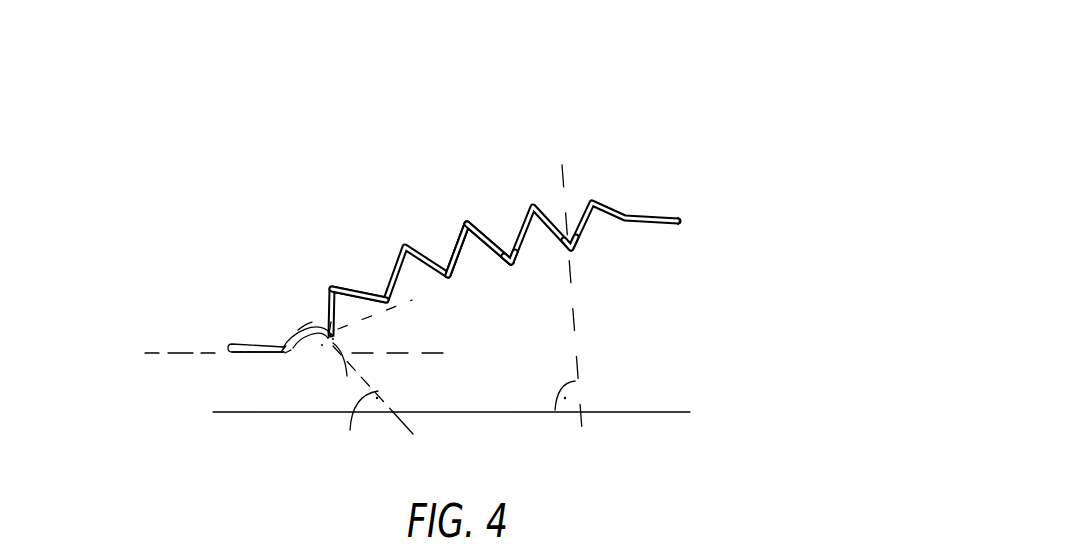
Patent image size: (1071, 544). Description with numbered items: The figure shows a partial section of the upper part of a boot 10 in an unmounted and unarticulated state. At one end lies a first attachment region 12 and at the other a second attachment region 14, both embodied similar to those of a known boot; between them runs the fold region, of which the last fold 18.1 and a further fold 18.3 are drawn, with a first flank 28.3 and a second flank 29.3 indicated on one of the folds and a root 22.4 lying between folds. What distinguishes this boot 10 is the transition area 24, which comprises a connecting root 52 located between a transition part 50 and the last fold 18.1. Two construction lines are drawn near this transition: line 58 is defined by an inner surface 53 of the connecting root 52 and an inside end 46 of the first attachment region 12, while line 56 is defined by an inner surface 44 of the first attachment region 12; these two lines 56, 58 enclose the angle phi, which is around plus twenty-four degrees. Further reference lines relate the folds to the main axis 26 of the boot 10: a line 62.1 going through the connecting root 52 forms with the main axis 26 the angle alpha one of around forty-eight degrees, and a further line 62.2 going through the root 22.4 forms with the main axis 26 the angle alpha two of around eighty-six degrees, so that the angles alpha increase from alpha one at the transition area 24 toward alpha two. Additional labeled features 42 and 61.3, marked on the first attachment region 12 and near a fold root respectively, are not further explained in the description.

The boot 10 is at (596, 66).
The first attachment region 12 is at (248, 363).
The second attachment region 14 is at (662, 201).
The last fold 18.1 is at (332, 285).
The third tooth 18.3 is at (467, 222).
The root 22.4 is at (572, 248).
The transition area 24 is at (292, 297).
The main axis 26 is at (230, 413).
The tooth flank 28.3 is at (457, 249).
The tooth flank 29.3 is at (488, 236).
The flat section 42 is at (279, 342).
The inner surface 44 is at (261, 355).
The inside end 46 is at (284, 357).
The transition part 50 is at (298, 330).
The connecting root 52 is at (321, 320).
The inner surface 53 is at (333, 335).
The line 56 is at (147, 352).
The line 58 is at (400, 303).
The tooth tip region 61.3 is at (509, 261).
The line 62.1 is at (426, 436).
The further line 62.2 is at (583, 430).